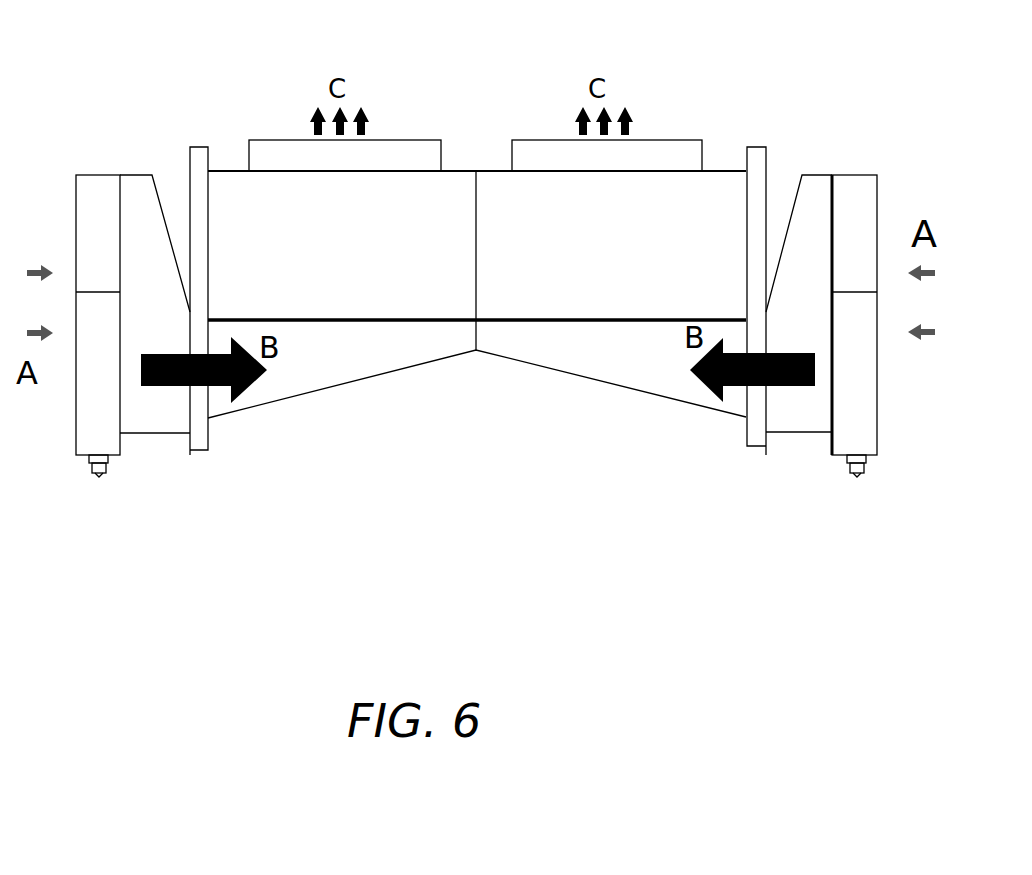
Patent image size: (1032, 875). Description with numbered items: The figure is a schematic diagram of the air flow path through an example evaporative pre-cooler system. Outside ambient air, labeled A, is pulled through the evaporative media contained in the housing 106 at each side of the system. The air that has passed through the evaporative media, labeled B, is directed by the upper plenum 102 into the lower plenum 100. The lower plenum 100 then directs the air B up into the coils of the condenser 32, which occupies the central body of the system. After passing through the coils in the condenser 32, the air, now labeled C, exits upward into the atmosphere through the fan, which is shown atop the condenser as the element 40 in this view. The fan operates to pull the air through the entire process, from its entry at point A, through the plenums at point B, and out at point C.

The condenser 32 is at (512, 195).
The heat sink 40 is at (265, 152).
The lower plenum 100 is at (341, 397).
The upper plenum 102 is at (164, 188).
The housing 106 is at (86, 166).